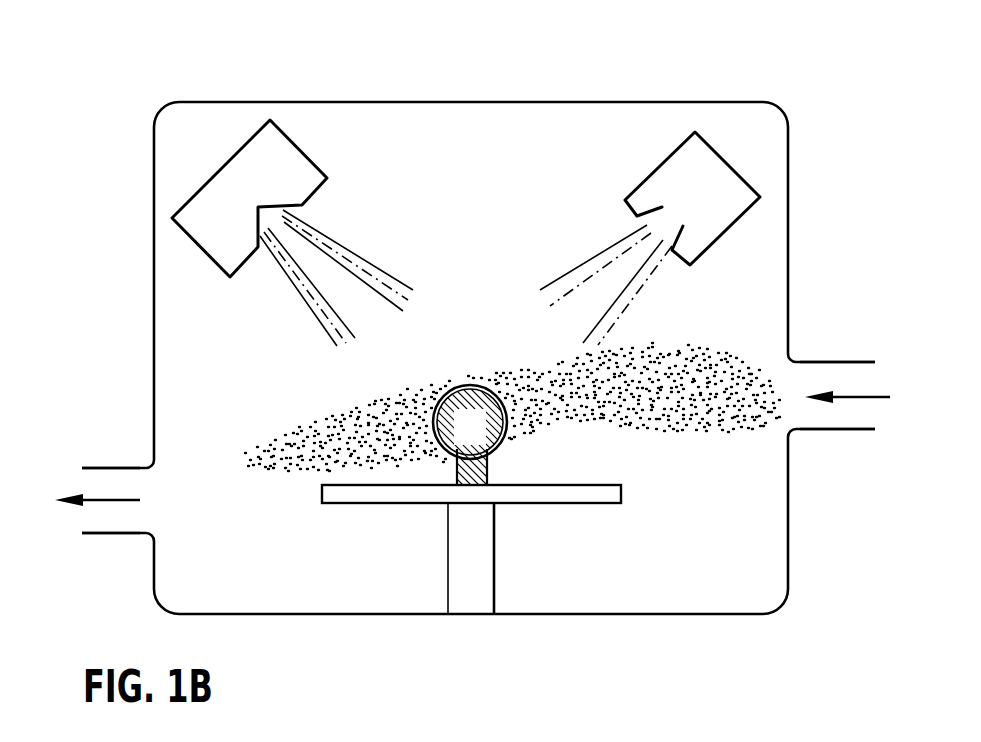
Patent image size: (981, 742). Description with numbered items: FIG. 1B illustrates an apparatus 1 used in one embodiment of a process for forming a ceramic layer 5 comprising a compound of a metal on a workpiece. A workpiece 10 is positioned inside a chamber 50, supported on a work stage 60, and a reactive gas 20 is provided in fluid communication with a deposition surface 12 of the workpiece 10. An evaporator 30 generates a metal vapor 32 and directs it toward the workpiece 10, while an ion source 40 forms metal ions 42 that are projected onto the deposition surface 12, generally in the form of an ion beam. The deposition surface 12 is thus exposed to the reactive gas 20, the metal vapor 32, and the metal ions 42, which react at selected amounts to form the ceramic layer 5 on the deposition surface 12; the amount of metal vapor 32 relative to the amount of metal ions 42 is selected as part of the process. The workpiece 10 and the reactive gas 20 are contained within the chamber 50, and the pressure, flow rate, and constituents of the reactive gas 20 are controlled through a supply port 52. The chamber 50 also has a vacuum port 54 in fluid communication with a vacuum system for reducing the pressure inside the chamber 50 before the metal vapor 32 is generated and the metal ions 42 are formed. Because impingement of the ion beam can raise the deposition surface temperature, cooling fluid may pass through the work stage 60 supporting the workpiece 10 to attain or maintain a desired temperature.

The coating system 1 is at (108, 82).
The ceramic layer 5 is at (449, 384).
The workpiece 10 is at (482, 440).
The deposition surface 12 is at (503, 443).
The reactive gas 20 is at (692, 350).
The evaporator 30 is at (310, 158).
The metal vapor 32 is at (387, 270).
The ion source 40 is at (647, 173).
The metal ions 42 is at (590, 258).
The chamber 50 is at (795, 537).
The supply port 52 is at (847, 364).
The vacuum port 54 is at (105, 472).
The work stage 60 is at (623, 498).